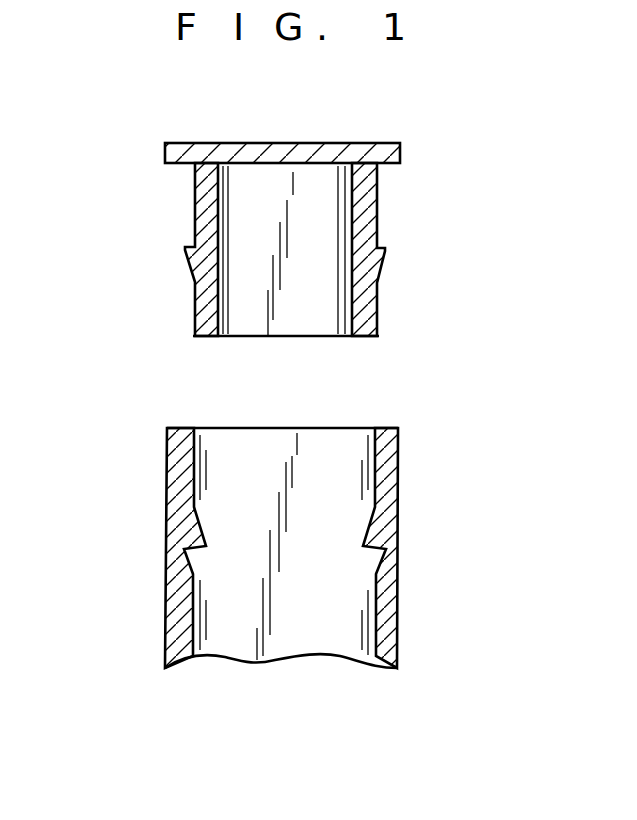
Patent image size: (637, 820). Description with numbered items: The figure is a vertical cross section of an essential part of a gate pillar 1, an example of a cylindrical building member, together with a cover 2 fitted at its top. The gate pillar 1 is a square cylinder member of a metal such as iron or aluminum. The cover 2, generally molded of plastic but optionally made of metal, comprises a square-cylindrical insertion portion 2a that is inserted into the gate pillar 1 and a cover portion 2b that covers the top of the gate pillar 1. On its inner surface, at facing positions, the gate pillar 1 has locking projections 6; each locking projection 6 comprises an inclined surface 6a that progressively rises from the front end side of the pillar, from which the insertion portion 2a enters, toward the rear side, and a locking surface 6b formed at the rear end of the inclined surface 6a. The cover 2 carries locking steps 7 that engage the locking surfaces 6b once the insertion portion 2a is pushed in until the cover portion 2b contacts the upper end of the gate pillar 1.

The gate pillar 1 is at (167, 443).
The cover 2 is at (326, 220).
The insertion portion 2a is at (377, 172).
The cover portion 2b is at (348, 145).
The locking projections 6 is at (269, 539).
The inclined surface 6a is at (199, 527).
The locking surface 6b is at (272, 573).
The locking steps 7 is at (191, 248).